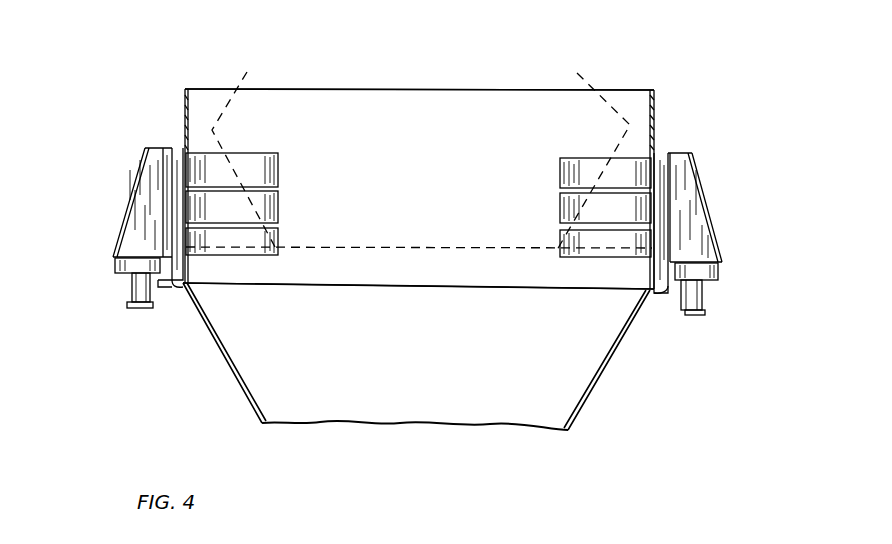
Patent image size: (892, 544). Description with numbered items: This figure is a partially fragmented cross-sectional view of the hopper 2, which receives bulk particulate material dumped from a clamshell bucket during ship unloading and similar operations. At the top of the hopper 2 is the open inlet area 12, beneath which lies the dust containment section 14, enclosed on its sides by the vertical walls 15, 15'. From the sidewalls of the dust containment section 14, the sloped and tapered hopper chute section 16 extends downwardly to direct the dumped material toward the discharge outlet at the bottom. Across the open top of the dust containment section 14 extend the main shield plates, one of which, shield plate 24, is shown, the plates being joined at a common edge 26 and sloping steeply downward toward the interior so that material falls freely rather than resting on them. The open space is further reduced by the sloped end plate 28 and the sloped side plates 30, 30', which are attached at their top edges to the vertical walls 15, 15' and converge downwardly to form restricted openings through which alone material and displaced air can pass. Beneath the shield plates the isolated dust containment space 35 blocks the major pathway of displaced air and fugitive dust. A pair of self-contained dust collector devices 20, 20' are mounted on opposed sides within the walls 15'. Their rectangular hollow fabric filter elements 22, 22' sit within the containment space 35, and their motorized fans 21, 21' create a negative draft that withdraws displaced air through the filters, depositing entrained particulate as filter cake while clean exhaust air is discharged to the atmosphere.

The hopper 2 is at (215, 354).
The open inlet area 12 is at (268, 286).
The dust containment section 14 is at (492, 89).
The vertical wall 15 is at (690, 189).
The vertical wall 15' is at (142, 184).
The hopper chute section 16 is at (607, 363).
The dust collector device 20 is at (709, 223).
The dust collector device 20' is at (128, 217).
The motorized fan 21 is at (721, 296).
The motorized fan 21' is at (107, 290).
The fabric filter element 22 is at (571, 194).
The fabric filter element 22' is at (268, 192).
The main shield plate 24 is at (380, 285).
The common edge 26 is at (388, 89).
The sloped end plate 28 is at (435, 247).
The sloped side plate 30 is at (587, 154).
The sloped side plate 30' is at (248, 151).
The dust containment space 35 is at (444, 190).